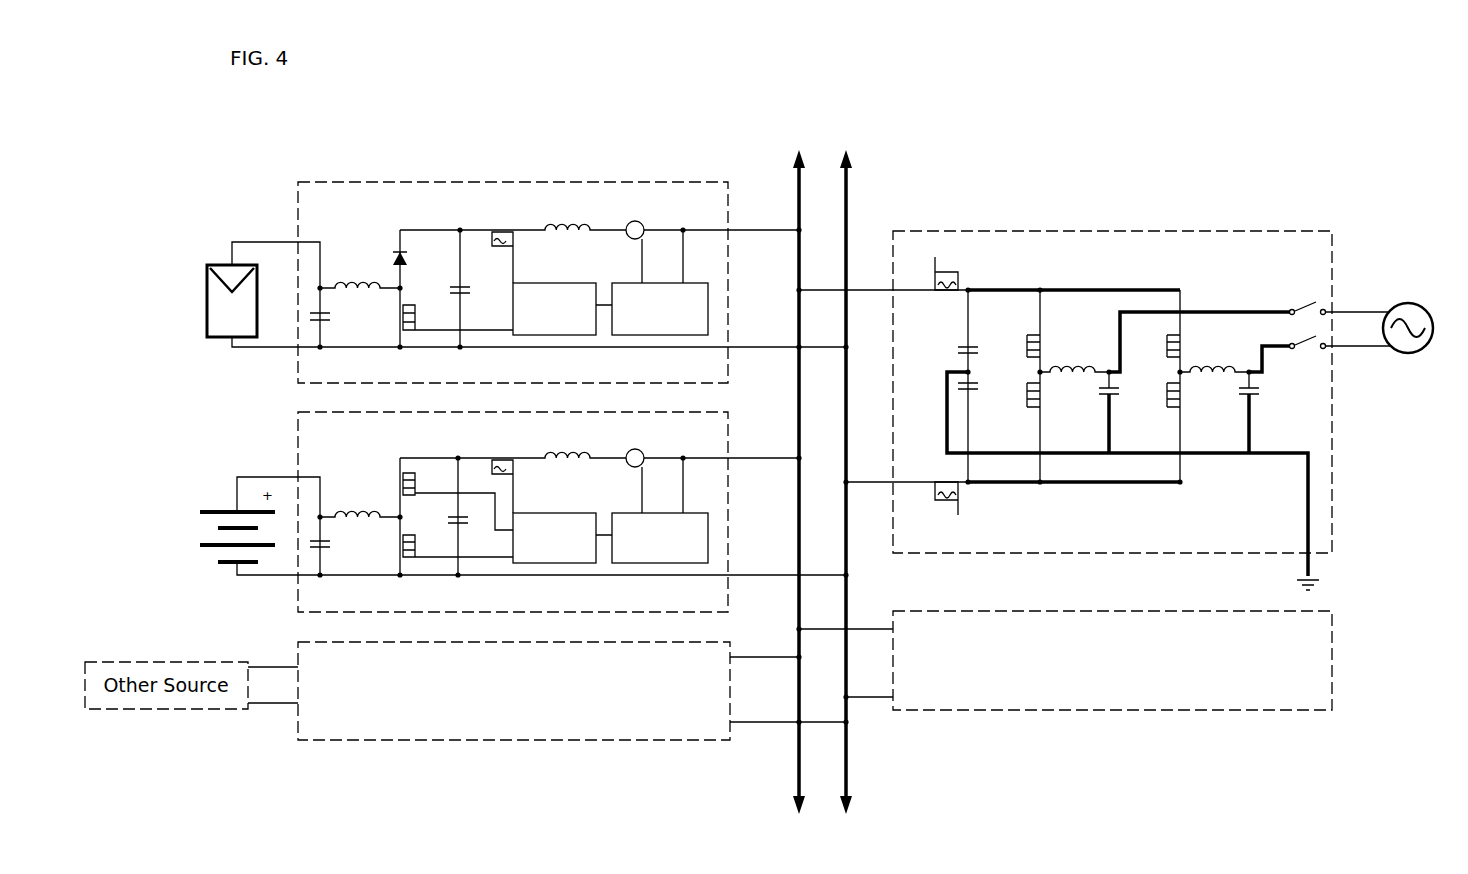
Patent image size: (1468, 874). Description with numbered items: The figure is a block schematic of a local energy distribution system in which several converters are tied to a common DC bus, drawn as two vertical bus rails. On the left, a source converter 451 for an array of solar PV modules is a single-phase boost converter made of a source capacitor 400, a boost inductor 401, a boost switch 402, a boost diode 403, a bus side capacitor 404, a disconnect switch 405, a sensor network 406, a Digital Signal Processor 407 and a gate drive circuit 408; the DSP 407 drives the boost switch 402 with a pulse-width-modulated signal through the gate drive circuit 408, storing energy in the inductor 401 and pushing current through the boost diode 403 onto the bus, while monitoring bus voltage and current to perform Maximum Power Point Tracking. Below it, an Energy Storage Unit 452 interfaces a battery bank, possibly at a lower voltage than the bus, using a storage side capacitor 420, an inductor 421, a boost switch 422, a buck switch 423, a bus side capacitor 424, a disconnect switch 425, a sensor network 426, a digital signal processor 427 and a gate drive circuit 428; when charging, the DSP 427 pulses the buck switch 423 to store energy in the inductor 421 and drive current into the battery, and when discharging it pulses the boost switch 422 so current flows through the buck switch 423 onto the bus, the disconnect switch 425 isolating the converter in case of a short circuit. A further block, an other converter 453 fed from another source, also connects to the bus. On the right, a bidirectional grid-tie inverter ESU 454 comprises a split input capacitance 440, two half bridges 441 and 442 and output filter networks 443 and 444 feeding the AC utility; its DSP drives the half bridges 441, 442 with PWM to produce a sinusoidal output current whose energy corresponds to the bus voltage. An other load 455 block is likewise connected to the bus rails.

The source capacitor 400 is at (332, 317).
The boost inductor 401 is at (352, 278).
The boost switch 402 is at (417, 317).
The boost diode 403 is at (408, 258).
The bus side capacitor 404 is at (463, 289).
The disconnect switch 405 is at (500, 230).
The sensor network 406 is at (641, 223).
The Digital Signal Processor (DSP) 407 is at (630, 283).
The gate drive circuit 408 is at (571, 282).
The storage side capacitor 420 is at (329, 546).
The inductor 421 is at (352, 516).
The boost switch 422 is at (417, 547).
The buck switch 423 is at (417, 480).
The bus side capacitor 424 is at (462, 524).
The disconnect switch 425 is at (516, 486).
The sensor network 426 is at (648, 471).
The digital signal processor 427 is at (660, 530).
The gate drive circuit 428 is at (582, 513).
The split input capacitance 440 is at (944, 378).
The half bridge 441 is at (1027, 408).
The half bridge 442 is at (1167, 410).
The output filter network 443 is at (1063, 378).
The output filter network 444 is at (1203, 378).
The source converter 451 is at (298, 182).
The Energy Storage Unit 452 is at (298, 412).
The other converter 453 is at (298, 642).
The bidirectional grid-tie inverter ESU 454 is at (1333, 231).
The other load 455 is at (1316, 611).